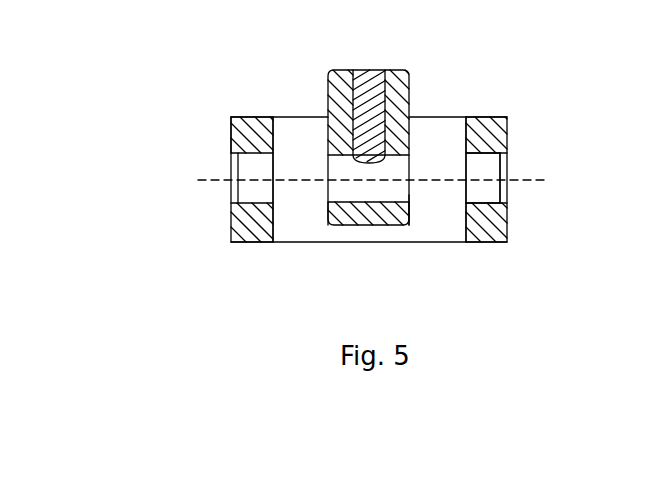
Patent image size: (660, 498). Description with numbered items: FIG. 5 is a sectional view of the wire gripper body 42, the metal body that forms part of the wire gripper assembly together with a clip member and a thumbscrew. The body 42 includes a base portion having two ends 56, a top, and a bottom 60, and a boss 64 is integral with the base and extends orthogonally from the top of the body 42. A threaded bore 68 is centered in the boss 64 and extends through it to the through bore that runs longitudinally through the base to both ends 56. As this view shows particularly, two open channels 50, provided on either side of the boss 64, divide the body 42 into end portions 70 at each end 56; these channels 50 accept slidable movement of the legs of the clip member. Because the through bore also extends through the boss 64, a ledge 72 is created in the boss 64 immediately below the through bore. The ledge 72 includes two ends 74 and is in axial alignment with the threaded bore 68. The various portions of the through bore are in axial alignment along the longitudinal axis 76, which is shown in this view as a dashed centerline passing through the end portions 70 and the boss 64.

The wire gripper body 42 is at (165, 76).
The channels 50 is at (297, 128).
The ends 56 is at (230, 138).
The bottom 60 is at (479, 173).
The boss 64 is at (405, 72).
The threaded bore 68 is at (370, 90).
The end portions 70 is at (252, 232).
The ledge 72 is at (376, 216).
The ends 74 is at (412, 207).
The longitudinal axis 76 is at (210, 182).